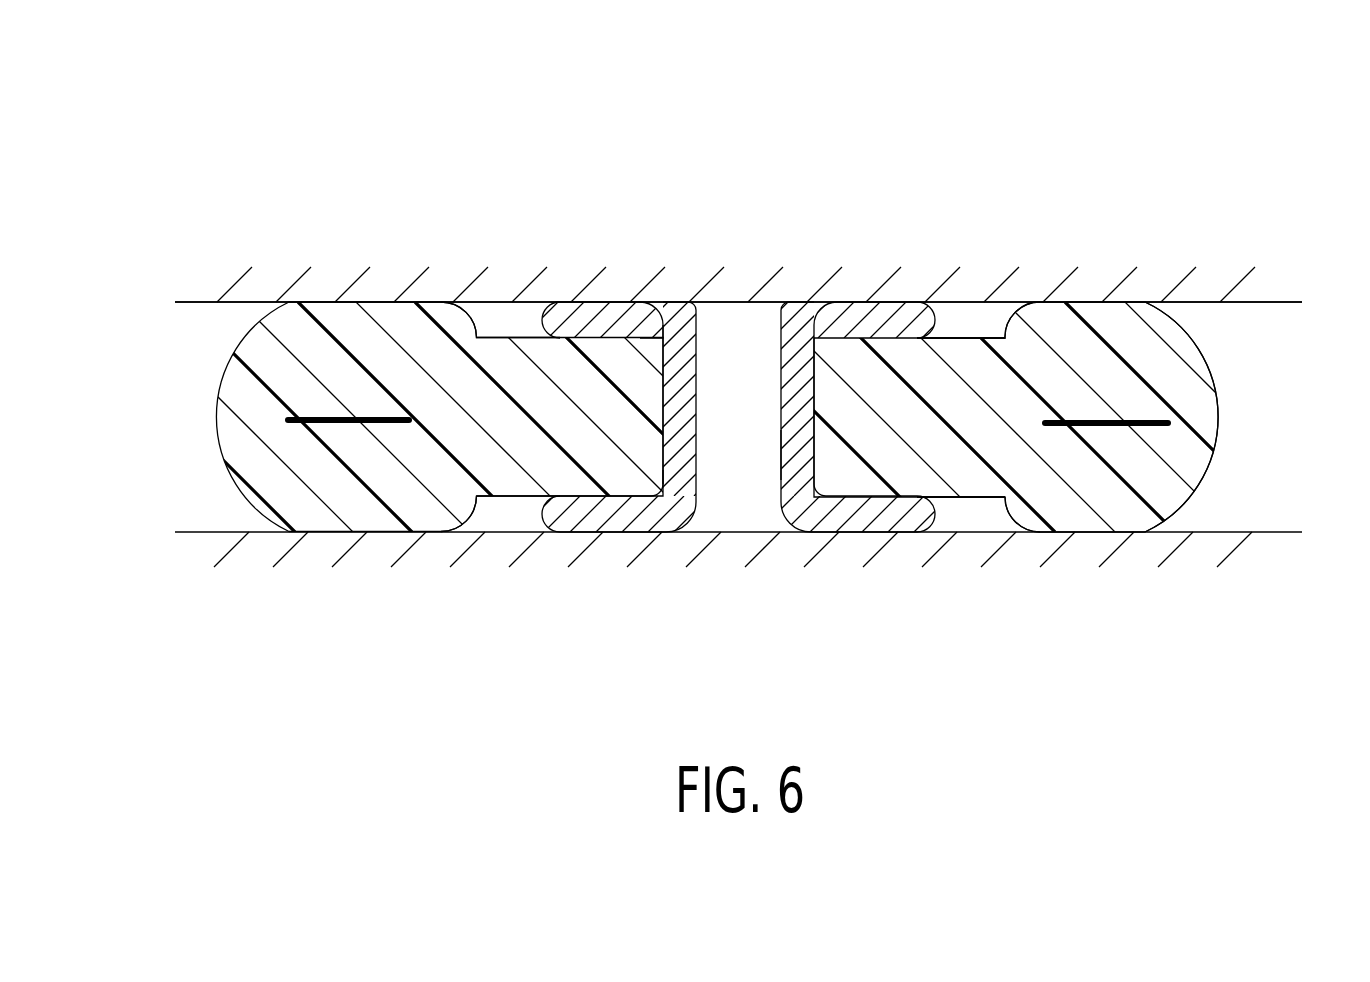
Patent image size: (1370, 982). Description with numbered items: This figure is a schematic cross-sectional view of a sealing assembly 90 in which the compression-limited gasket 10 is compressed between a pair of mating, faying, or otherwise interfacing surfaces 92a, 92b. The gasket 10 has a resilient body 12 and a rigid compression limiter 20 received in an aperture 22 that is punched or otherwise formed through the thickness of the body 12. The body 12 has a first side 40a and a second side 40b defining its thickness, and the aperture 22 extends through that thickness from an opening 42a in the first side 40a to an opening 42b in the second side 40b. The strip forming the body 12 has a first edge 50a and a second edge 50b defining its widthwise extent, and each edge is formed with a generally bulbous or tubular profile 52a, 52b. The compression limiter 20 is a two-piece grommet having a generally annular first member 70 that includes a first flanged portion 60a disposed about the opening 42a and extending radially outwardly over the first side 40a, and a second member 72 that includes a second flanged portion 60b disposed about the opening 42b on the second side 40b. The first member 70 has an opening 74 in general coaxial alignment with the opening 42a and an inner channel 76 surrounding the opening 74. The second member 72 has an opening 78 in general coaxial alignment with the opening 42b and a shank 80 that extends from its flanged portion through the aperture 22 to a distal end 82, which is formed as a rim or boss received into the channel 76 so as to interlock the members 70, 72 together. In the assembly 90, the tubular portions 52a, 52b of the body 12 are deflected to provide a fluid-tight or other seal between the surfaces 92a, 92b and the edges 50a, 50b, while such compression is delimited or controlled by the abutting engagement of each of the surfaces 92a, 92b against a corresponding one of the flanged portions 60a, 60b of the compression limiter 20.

The compression-limited gasket construction 10 is at (1272, 381).
The resilient body 12 is at (1000, 520).
The compression limiter 20 is at (940, 323).
The aperture 22 is at (724, 426).
The first side 40a is at (527, 338).
The second side 40b is at (474, 497).
The opening in first side 42a is at (672, 322).
The opening in second side 42b is at (685, 482).
The first edge 50a is at (236, 348).
The second edge 50b is at (1197, 348).
The tubular profile of first edge 52a is at (220, 450).
The tubular profile of second edge 52b is at (1213, 452).
The first flanged portion 60a is at (937, 323).
The second flanged portion 60b is at (945, 516).
The first member 70 is at (622, 302).
The second member 72 is at (546, 512).
The opening of first member 74 is at (790, 322).
The inner channel 76 is at (665, 325).
The opening of second member 78 is at (790, 512).
The shank 80 is at (783, 458).
The distal end 82 is at (833, 305).
The sealing assembly 90 is at (1192, 117).
The first interfacing surface 92a is at (186, 302).
The second interfacing surface 92b is at (219, 531).